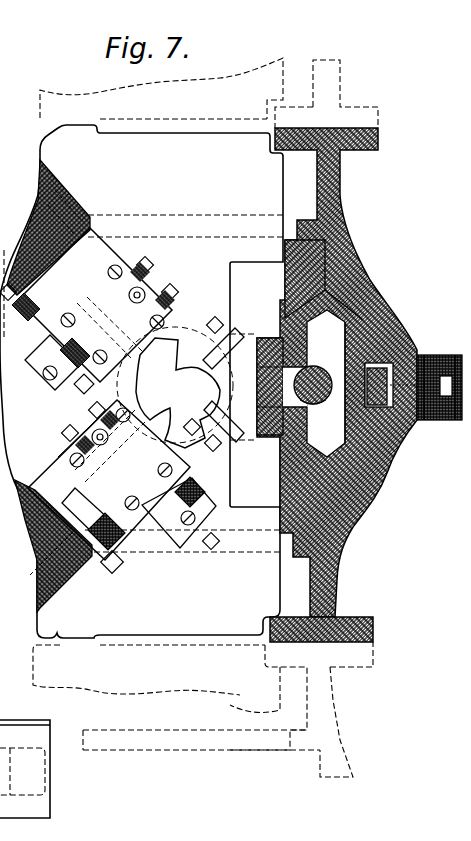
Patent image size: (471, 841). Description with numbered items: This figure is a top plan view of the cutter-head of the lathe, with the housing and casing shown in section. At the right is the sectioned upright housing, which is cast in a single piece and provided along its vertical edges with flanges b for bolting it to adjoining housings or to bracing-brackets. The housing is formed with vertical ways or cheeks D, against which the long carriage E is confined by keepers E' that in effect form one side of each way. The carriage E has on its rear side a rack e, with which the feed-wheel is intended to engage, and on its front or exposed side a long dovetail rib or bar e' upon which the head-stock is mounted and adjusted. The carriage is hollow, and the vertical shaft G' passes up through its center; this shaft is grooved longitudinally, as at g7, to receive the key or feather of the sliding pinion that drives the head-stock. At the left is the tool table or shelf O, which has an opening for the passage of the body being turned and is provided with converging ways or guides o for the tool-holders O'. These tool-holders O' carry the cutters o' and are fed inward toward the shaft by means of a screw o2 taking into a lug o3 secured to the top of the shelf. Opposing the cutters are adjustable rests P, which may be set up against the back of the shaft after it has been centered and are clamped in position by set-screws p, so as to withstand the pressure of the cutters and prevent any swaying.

The tool table or shelf O is at (141, 381).
The converging ways or guides o is at (49, 386).
The tool-holders O' is at (118, 400).
The screw o2 is at (20, 302).
The lug o3 is at (63, 379).
The cutters o' is at (178, 393).
The set-screws p is at (175, 373).
The adjustable rests P is at (222, 345).
The vertical ways or cheeks D is at (337, 372).
The keepers E' is at (305, 279).
The dovetail rib or bar e' is at (270, 386).
The vertical shaft G' is at (313, 385).
The longitudinal groove g7 is at (316, 408).
The carriage E is at (355, 384).
The rack e is at (391, 385).
The flanges b is at (321, 629).